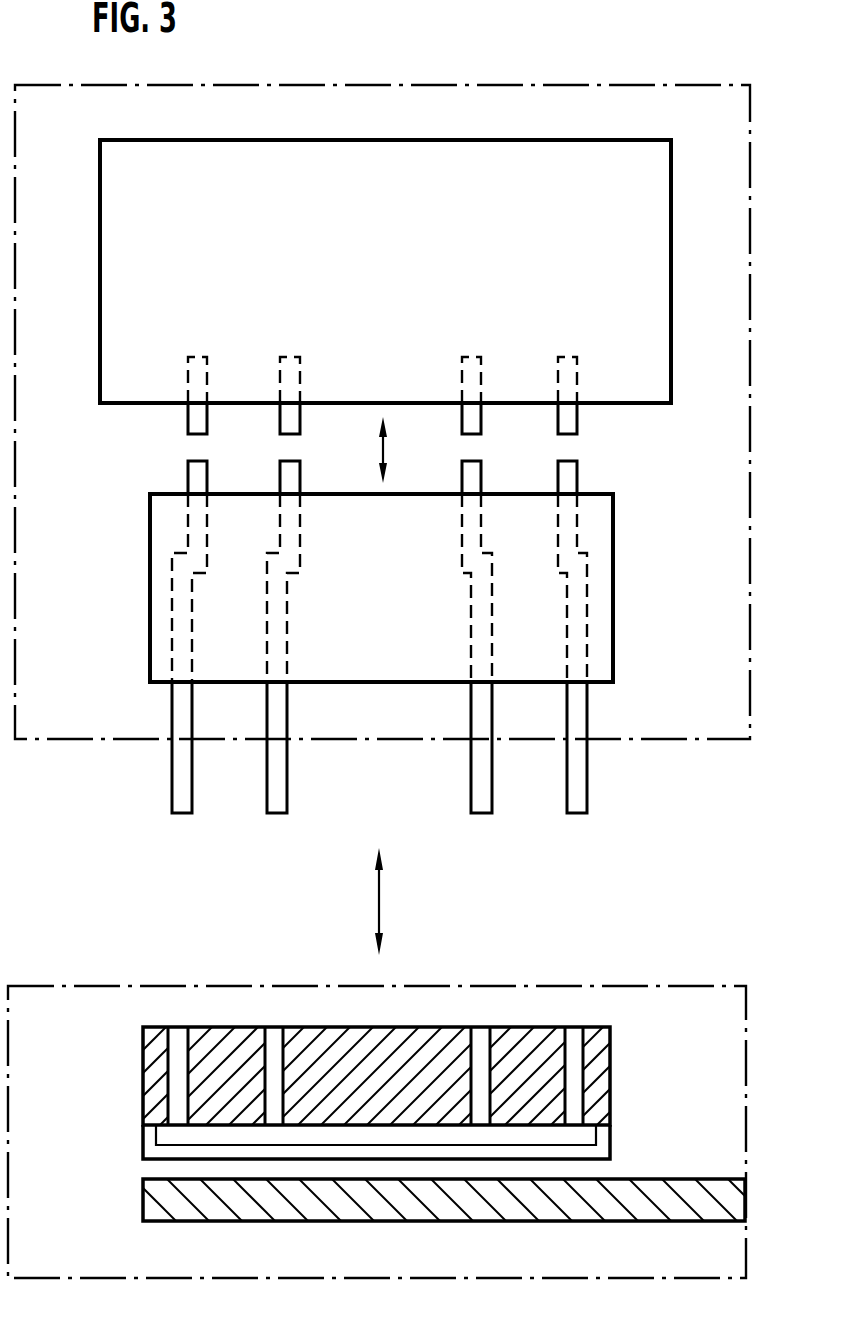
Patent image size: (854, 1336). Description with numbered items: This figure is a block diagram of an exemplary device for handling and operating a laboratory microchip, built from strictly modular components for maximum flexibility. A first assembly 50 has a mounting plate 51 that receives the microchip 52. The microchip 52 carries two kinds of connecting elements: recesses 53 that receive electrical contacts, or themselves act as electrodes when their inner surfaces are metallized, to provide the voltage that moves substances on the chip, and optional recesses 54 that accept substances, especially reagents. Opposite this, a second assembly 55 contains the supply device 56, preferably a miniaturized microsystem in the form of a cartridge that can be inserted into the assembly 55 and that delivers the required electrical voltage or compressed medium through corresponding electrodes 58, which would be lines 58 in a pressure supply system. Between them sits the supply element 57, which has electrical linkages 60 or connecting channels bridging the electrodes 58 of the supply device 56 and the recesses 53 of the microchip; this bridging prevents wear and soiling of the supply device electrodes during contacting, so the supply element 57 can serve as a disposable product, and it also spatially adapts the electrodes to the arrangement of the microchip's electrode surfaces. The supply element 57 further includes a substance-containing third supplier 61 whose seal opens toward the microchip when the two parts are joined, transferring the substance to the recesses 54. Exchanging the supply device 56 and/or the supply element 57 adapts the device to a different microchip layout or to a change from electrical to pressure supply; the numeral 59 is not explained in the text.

The first assembly 50 is at (145, 978).
The mounting plate 51 is at (156, 1199).
The microchip 52 is at (592, 1058).
The recesses 53 is at (575, 1035).
The recesses 54 is at (274, 1035).
The second assembly 55 is at (595, 77).
The supply device 56 is at (643, 264).
The supply element 57 is at (598, 640).
The electrodes 58 is at (192, 427).
The inner contact pins 59 is at (300, 425).
The electrical linkages 60 is at (198, 475).
The third supplier 61 is at (290, 468).